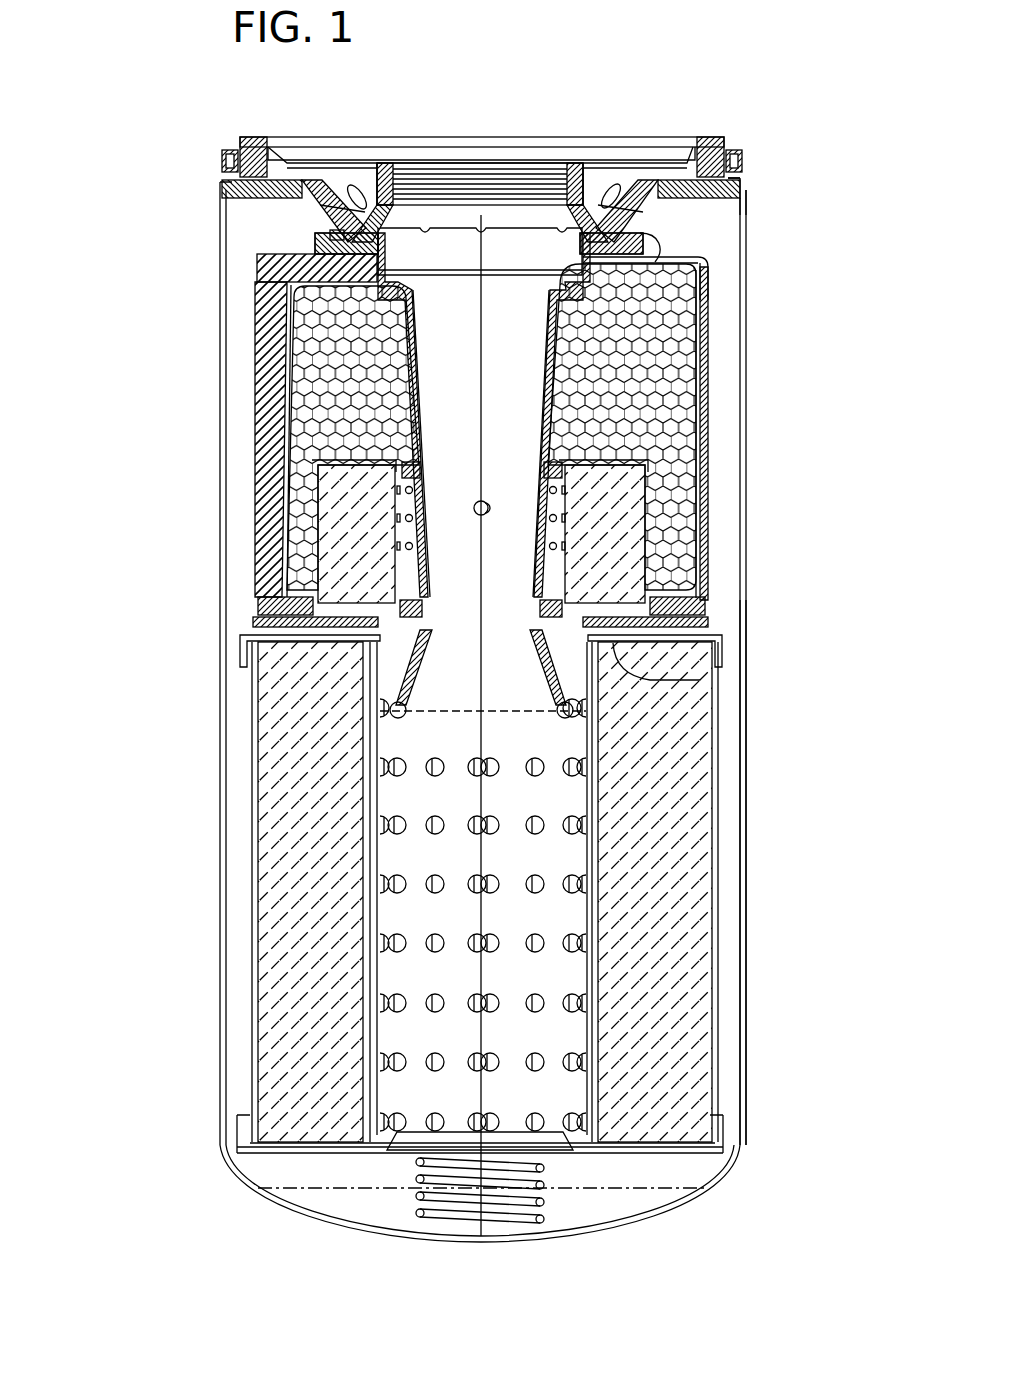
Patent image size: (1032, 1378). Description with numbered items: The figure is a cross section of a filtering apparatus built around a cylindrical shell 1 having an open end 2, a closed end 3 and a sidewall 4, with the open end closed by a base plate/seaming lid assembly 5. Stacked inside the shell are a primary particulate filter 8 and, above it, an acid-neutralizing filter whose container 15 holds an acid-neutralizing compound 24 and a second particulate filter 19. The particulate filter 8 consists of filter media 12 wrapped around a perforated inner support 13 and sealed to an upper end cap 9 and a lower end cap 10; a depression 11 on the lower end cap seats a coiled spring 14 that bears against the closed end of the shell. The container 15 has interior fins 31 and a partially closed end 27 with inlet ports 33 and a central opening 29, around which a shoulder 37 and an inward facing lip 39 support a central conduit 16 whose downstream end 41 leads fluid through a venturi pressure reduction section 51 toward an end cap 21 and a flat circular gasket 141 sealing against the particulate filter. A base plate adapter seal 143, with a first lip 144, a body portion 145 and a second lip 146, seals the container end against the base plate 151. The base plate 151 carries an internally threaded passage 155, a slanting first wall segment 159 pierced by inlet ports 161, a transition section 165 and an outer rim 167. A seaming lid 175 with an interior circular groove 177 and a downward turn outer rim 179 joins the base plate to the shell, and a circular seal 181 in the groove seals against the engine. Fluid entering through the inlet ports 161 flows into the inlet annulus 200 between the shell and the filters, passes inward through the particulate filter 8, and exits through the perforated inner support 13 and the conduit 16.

The shell 1 is at (741, 575).
The open end 2 is at (745, 70).
The closed end 3 is at (547, 1237).
The sidewall 4 is at (741, 808).
The base plate/seaming lid assembly 5 is at (250, 128).
The primary particulate filter 8 is at (713, 953).
The upper end cap 9 is at (723, 652).
The lower end cap 10 is at (715, 1155).
The depression 11 is at (410, 1136).
The filter media 12 is at (713, 1003).
The perforated inner support 13 is at (425, 915).
The coiled spring 14 is at (418, 1220).
The acid-neutralizing filter container 15 is at (254, 480).
The conduit 16 is at (707, 432).
The second particulate filter 19 is at (610, 532).
The end cap 21 is at (405, 714).
The acid-neutralizing compound 24 is at (650, 378).
The partially closed end 27 is at (310, 248).
The central opening 29 is at (515, 295).
The interior fins 31 is at (257, 425).
The inlet ports 33 is at (318, 242).
The shoulder 37 is at (398, 293).
The inward facing lip 39 is at (432, 292).
The downstream end 41 is at (407, 348).
The pressure reduction section 51 is at (394, 538).
The flat circular gasket 141 is at (700, 685).
The base plate adapter seal 143 is at (697, 297).
The first lip 144 is at (560, 262).
The body portion 145 is at (347, 233).
The second lip 146 is at (335, 229).
The base plate 151 is at (580, 196).
The threaded passage 155 is at (486, 180).
The slanting first wall segment 159 is at (614, 193).
The inlet ports 161 is at (353, 193).
The transition section 165 is at (682, 180).
The outer rim 167 is at (743, 210).
The seaming lid 175 is at (640, 157).
The interior circular groove 177 is at (250, 208).
The downward turn outer rim 179 is at (238, 148).
The circular seal 181 is at (713, 137).
The inlet annulus 200 is at (237, 594).